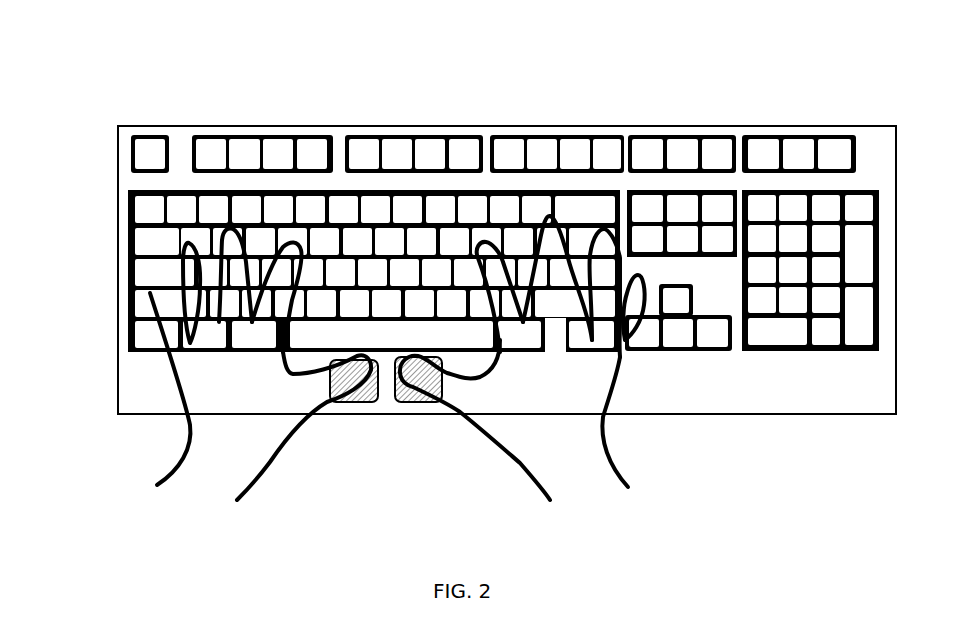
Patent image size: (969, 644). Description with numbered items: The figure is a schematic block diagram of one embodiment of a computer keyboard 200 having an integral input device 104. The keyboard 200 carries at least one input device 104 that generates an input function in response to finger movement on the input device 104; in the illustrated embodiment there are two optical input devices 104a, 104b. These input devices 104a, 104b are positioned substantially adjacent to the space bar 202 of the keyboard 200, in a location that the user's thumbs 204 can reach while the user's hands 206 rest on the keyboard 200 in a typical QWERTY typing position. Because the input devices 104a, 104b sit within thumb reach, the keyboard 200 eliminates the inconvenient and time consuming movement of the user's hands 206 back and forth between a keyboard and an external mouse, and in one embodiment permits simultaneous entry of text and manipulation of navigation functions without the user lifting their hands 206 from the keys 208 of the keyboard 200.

The computer keyboard 200 is at (829, 86).
The space bar 202 is at (389, 343).
The user's thumbs 204 is at (447, 387).
The user's hands 206 is at (218, 437).
The keys 208 is at (240, 165).
The input device 104 is at (420, 462).
The optical input device 104a is at (338, 405).
The optical input device 104b is at (395, 405).